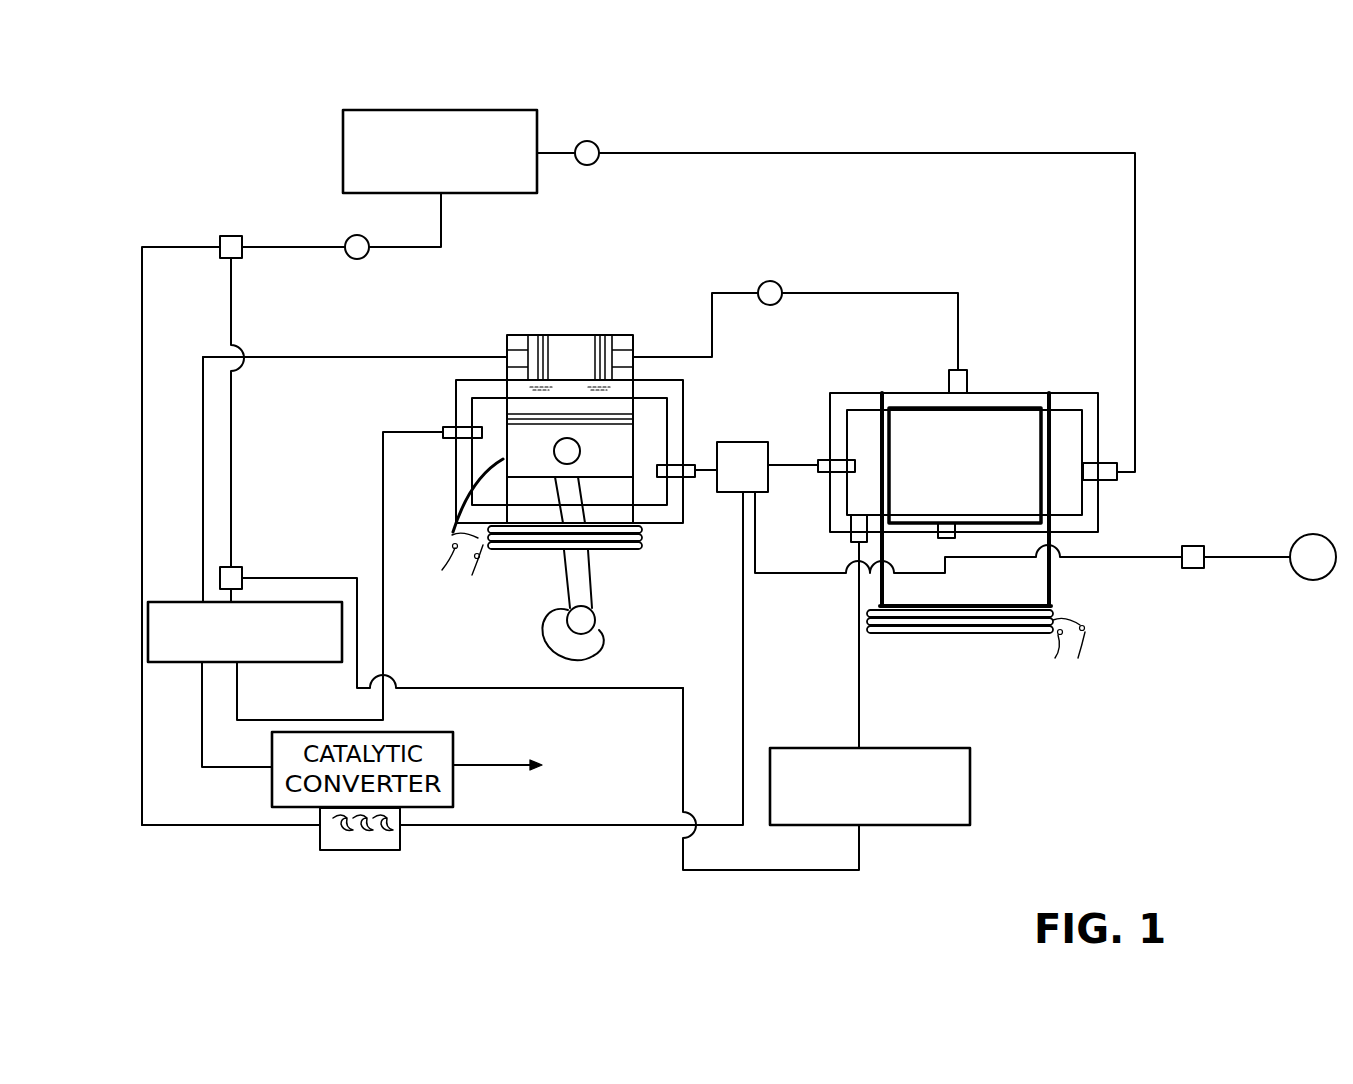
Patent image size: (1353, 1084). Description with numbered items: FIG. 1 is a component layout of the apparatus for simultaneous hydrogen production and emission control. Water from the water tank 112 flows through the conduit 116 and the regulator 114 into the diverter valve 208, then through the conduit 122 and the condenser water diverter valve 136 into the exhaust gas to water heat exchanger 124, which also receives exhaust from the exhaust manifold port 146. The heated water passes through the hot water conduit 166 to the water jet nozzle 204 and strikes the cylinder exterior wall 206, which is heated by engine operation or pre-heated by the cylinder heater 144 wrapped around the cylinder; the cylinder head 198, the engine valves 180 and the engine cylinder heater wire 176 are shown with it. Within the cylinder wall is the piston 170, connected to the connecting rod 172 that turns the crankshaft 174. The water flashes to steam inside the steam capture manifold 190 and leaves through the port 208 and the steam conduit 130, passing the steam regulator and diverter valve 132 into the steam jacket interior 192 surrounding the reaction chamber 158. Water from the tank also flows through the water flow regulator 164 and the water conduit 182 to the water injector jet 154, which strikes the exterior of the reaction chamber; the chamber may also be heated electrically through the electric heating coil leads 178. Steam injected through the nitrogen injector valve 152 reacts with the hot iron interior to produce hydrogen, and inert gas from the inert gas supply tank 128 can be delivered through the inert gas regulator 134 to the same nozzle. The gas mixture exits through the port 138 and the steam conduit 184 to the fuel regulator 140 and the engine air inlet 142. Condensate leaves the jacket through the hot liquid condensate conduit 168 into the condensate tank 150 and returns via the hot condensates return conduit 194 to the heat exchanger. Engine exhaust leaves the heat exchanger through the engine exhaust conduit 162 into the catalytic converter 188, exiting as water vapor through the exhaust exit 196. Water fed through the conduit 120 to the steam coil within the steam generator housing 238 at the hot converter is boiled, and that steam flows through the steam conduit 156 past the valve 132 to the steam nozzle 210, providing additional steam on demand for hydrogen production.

The water tank 112 is at (441, 110).
The water tank regulator 114 is at (349, 240).
The conduit 116 is at (441, 219).
The conduit 120 is at (142, 304).
The conduit 122 is at (231, 307).
The exhaust gas to water heat exchanger 124 is at (172, 602).
The inert gas supply tank 128 is at (1313, 534).
The steam conduit and diverter valve 130 is at (712, 476).
The steam regulator and diverter valve 132 is at (745, 440).
The inert gas regulator 134 is at (1193, 545).
The condenser water diverter valve 136 is at (242, 570).
The port 138 is at (949, 378).
The fuel regulator for hydrogen and steam mixture 140 is at (770, 281).
The engine air inlet 142 is at (633, 345).
The cylinder heater 144 is at (617, 551).
The exhaust manifold port 146 is at (484, 356).
The condensate tank 150 is at (938, 748).
The nitrogen injector valve 152 is at (953, 540).
The water injector jet 154 is at (1108, 483).
The steam conduit 156 is at (552, 828).
The reaction chamber 158 is at (1047, 437).
The engine exhaust conduit 162 is at (202, 727).
The water flow regulator 164 is at (588, 140).
The hot water conduit 166 is at (383, 461).
The hot liquid condensate conduit 168 is at (859, 702).
The piston 170 is at (448, 505).
The connecting rod 172 is at (595, 598).
The crankshaft 174 is at (602, 646).
The engine cylinder heater wire 176 is at (453, 555).
The electric heating coil leads 178 is at (1095, 645).
The engine valves 180 is at (541, 335).
The water conduit from water supply 182 is at (873, 152).
The steam conduit from reaction chamber 184 is at (911, 293).
The catalytic converter 188 is at (433, 732).
The steam capture manifold 190 is at (456, 493).
The steam jacket interior 192 is at (1073, 392).
The hot condensates return conduit 194 is at (761, 873).
The exhaust exit from catalytic converter 196 is at (512, 762).
The cylinder head 198 is at (597, 335).
The water jet nozzle 204 is at (443, 428).
The cylinder exterior wall 206 is at (633, 500).
The port 208 is at (233, 236).
The port 210 is at (818, 460).
The steam generator housing 238 is at (384, 853).